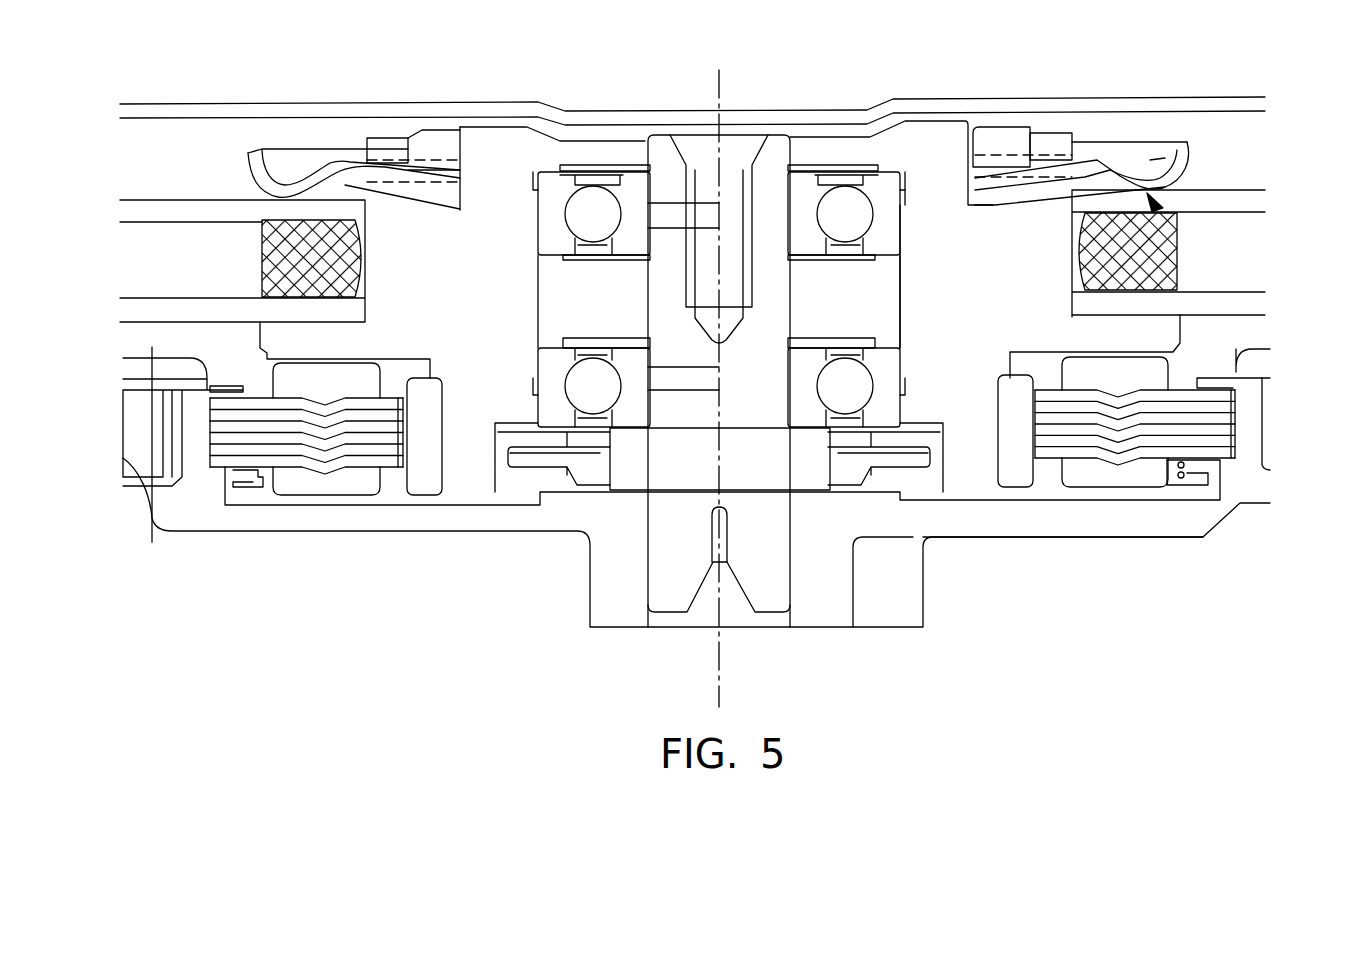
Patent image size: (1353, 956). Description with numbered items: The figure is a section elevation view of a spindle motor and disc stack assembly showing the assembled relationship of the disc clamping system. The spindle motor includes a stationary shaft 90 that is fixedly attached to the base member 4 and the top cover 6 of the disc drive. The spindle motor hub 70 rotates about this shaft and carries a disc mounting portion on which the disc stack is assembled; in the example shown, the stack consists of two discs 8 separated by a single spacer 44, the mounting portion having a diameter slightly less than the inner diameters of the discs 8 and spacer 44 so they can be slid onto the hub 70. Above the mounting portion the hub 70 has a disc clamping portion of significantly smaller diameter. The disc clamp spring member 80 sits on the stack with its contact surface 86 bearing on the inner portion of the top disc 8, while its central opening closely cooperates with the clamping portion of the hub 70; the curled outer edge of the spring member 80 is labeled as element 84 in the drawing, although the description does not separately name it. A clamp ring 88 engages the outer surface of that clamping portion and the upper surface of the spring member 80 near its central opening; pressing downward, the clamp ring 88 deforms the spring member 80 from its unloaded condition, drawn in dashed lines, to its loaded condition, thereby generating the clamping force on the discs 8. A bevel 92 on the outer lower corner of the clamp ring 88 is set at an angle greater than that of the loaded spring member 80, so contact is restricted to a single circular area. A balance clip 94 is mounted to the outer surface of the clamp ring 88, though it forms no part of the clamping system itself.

The base member 4 is at (1043, 518).
The top cover 6 is at (209, 112).
The disc 8 is at (1238, 204).
The spacer 44 is at (1165, 272).
The spindle motor hub 70 is at (963, 227).
The disc clamp spring member 80 is at (1120, 140).
The curled lever end 84 is at (1157, 160).
The contact surface 86 is at (1183, 227).
The clamp ring 88 is at (990, 133).
The stationary shaft 90 is at (758, 162).
The bevel 92 is at (413, 173).
The balance clip 94 is at (388, 140).